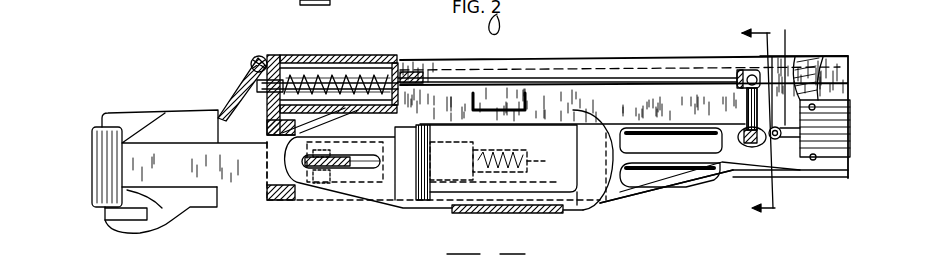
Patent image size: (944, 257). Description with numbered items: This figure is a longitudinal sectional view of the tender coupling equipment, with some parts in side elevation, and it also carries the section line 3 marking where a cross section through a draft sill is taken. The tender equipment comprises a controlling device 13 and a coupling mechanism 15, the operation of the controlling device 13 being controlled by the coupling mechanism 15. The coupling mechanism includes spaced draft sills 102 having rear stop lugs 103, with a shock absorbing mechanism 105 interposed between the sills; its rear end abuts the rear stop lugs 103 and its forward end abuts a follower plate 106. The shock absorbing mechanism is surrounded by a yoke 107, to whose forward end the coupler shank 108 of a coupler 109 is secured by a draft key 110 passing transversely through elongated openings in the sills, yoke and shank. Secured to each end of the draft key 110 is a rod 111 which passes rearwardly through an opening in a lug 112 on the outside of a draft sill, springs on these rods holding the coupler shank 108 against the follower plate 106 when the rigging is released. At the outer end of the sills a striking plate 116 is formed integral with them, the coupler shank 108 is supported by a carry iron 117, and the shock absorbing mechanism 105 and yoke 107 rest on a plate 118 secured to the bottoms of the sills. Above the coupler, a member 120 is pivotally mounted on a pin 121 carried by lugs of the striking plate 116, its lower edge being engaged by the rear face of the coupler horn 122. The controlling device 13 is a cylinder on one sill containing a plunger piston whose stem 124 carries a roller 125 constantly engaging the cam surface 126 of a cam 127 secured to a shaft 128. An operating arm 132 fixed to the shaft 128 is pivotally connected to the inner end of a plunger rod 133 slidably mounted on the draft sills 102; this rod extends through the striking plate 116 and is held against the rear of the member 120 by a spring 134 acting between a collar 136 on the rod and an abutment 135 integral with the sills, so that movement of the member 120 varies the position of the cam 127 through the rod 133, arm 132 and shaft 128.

The controlling device 13 is at (838, 135).
The coupling mechanism 15 is at (573, 110).
The section line 3- 3 is at (764, 122).
The draft sills 102 is at (818, 63).
The rear stop lugs 103 is at (623, 130).
The shock absorbing mechanism 105 is at (531, 135).
The follower plate 106 is at (422, 130).
The yoke 107 is at (587, 182).
The coupler shank 108 is at (278, 170).
The coupler 109 is at (117, 117).
The draft key 110 is at (303, 1).
The rod 111 is at (442, 163).
The lug 112 is at (472, 181).
The striking plate 116 is at (268, 122).
The carry iron 117 is at (293, 200).
The plate 118 is at (560, 213).
The member 120 is at (243, 90).
The pin 121 is at (252, 60).
The coupler horn 122 is at (177, 115).
The stem 124 is at (812, 56).
The roller 125 is at (799, 69).
The cam surface 126 is at (768, 146).
The cam 127 is at (747, 130).
The shaft 128 is at (740, 134).
The operating arm 132 is at (748, 100).
The plunger rod 133 is at (707, 78).
The spring 134 is at (335, 77).
The abutment 135 is at (402, 48).
The collar 136 is at (288, 78).